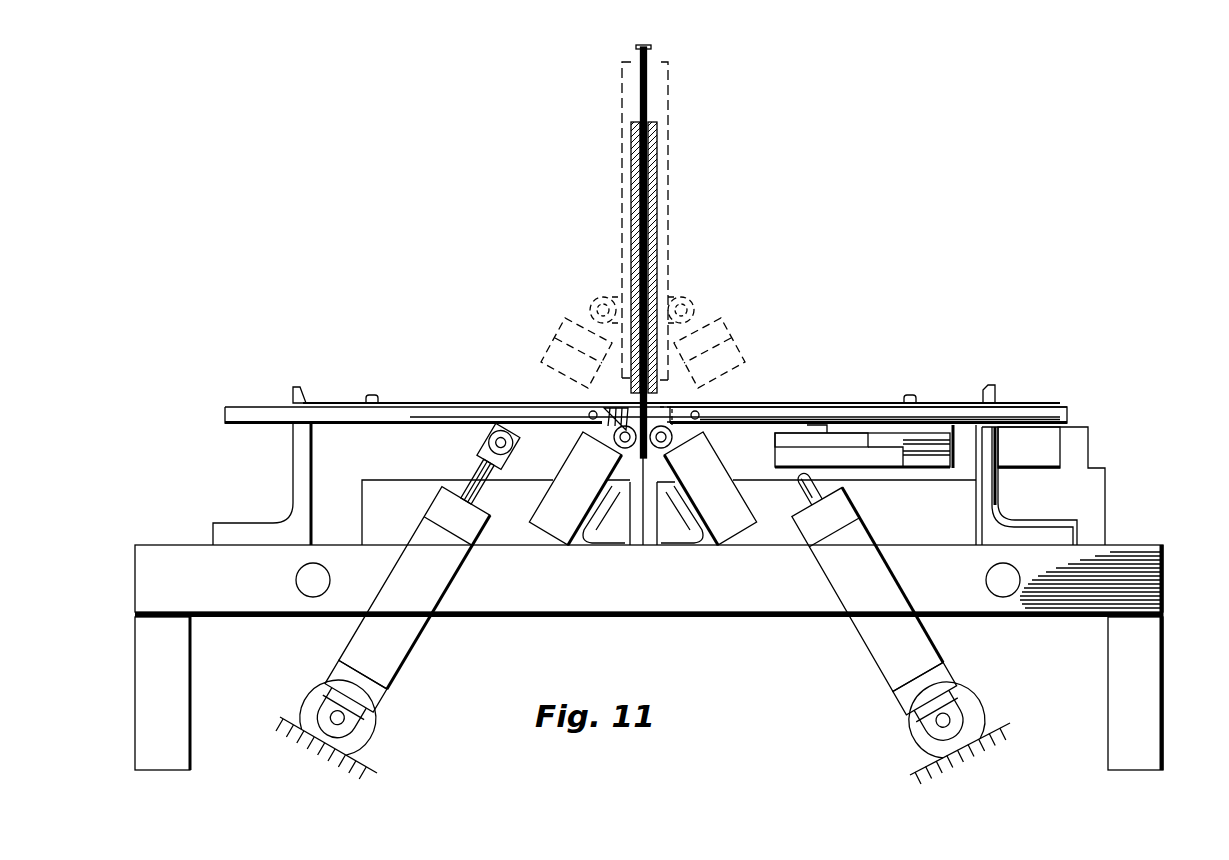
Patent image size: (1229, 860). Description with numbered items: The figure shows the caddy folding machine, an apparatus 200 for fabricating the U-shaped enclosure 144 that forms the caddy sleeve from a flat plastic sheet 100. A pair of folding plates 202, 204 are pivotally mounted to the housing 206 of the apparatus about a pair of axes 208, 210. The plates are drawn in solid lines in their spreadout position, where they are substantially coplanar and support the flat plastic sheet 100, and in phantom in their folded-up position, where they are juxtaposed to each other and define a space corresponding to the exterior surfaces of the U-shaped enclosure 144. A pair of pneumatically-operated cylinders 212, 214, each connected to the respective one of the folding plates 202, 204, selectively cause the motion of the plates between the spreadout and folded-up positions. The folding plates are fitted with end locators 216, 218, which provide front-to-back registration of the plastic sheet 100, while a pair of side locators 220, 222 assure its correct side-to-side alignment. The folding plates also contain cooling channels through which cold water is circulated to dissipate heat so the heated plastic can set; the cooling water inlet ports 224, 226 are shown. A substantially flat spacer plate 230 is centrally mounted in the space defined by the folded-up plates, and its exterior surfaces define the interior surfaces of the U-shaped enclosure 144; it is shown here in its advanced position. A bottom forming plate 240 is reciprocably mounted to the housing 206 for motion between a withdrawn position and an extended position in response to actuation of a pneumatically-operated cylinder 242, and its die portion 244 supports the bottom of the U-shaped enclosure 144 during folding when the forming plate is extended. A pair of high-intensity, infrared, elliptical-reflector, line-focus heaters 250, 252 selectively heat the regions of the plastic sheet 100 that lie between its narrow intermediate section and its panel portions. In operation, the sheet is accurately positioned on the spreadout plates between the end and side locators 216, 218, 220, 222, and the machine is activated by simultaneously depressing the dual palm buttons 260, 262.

The apparatus 200 is at (935, 104).
The flat plastic sheet 100 is at (358, 402).
The U-shaped enclosure 144 is at (653, 240).
The folding plate 202 is at (630, 170).
The folding plate 204 is at (665, 170).
The housing 206 is at (1130, 548).
The axis 208 is at (600, 440).
The axis 210 is at (680, 441).
The pneumatically-operated cylinder 212 is at (563, 328).
The pneumatically-operated cylinder 214 is at (727, 330).
The end locator 216 is at (374, 395).
The end locator 218 is at (908, 396).
The side locator 220 is at (296, 388).
The side locator 222 is at (989, 388).
The cooling water inlet port 224 is at (592, 407).
The cooling water inlet port 226 is at (700, 413).
The spacer plate 230 is at (628, 94).
The bottom forming plate 240 is at (806, 428).
The pneumatically-operated cylinder 242 is at (1020, 455).
The die portion 244 is at (665, 407).
The heater 250 is at (570, 545).
The heater 252 is at (720, 547).
The palm button 260 is at (313, 584).
The palm button 262 is at (1003, 584).